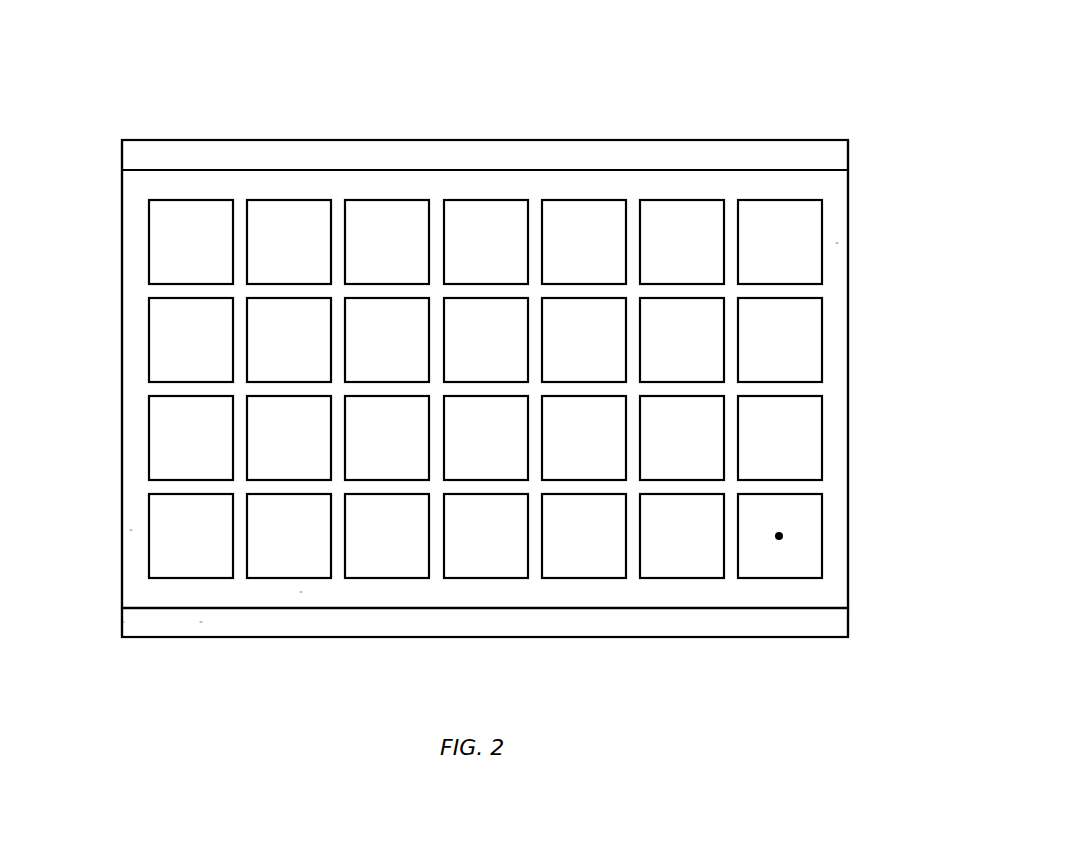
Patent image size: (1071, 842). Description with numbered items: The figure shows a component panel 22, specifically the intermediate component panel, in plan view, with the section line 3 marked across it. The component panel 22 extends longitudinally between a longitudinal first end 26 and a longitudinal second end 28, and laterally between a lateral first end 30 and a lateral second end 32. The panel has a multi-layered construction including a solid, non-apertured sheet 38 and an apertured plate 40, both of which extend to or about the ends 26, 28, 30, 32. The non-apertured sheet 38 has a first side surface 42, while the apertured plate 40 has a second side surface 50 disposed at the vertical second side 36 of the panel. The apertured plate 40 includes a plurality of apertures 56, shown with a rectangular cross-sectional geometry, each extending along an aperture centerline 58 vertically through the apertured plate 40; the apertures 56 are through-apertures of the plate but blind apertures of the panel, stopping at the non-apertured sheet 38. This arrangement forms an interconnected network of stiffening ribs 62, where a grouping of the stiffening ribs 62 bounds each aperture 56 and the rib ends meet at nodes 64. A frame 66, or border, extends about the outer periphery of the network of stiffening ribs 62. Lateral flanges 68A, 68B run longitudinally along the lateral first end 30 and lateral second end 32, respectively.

The component panel 22 is at (828, 82).
The longitudinal first end 26 is at (122, 423).
The longitudinal second end 28 is at (849, 385).
The lateral first end 30 is at (202, 640).
The lateral second end 32 is at (186, 140).
The vertical second side 36 is at (146, 594).
The non-apertured sheet 38 is at (115, 632).
The apertured plate 40 is at (112, 532).
The first side surface 42 is at (263, 622).
The second side surface 50 is at (313, 590).
The aperture 56 is at (177, 254).
The aperture centerline 58 is at (781, 536).
The stiffening rib 62 is at (632, 233).
The node 64 is at (537, 290).
The frame 66 is at (836, 243).
The lateral flange 68A is at (490, 625).
The lateral flange 68B is at (488, 152).
The section line 3 is at (682, 118).